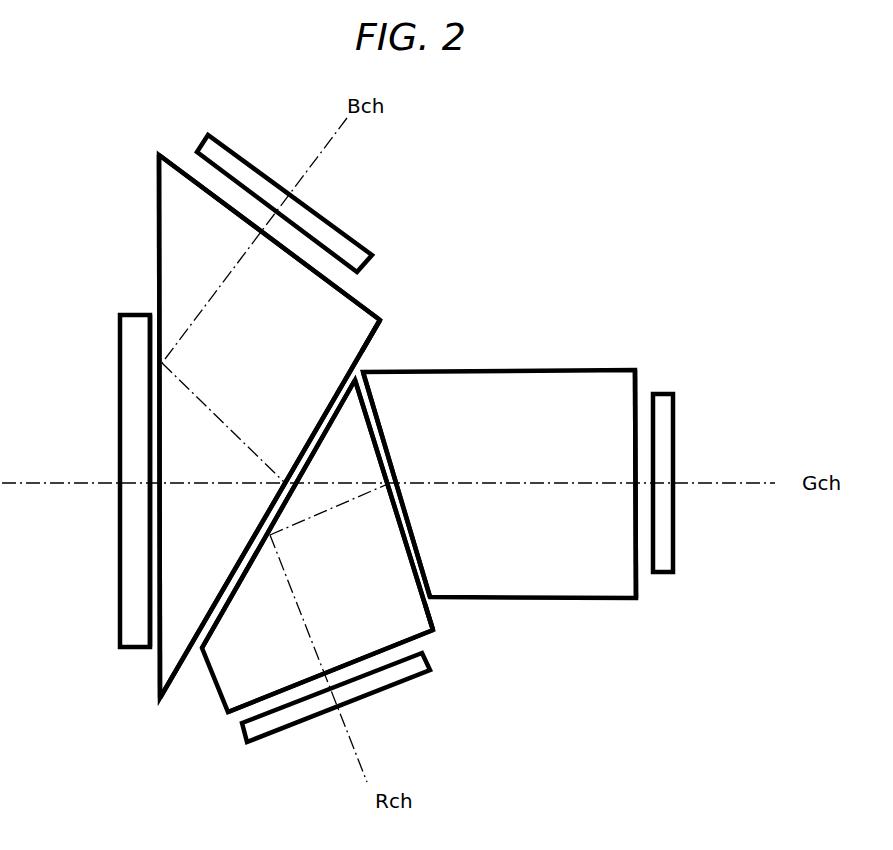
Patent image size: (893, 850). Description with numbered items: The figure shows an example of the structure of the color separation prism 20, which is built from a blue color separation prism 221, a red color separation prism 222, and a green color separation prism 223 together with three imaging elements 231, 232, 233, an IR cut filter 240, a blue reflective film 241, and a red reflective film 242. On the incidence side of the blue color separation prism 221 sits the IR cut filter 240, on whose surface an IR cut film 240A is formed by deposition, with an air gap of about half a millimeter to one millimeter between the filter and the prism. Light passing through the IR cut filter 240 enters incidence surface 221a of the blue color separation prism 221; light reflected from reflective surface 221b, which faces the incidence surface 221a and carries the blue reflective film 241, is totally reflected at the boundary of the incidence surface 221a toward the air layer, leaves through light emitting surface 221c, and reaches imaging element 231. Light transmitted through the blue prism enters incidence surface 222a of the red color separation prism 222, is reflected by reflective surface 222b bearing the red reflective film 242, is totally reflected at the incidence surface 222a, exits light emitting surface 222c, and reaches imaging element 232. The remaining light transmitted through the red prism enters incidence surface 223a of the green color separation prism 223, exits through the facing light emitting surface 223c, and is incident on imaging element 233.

The color separation prism 20 is at (588, 206).
The blue color separation prism 221 is at (264, 426).
The incidence surface 221a is at (158, 188).
The reflective surface 221b is at (307, 442).
The light emitting surface 221c is at (285, 252).
The red color separation prism 222 is at (361, 567).
The incidence surface 222a is at (247, 573).
The reflective surface 222b is at (395, 523).
The light emitting surface 222c is at (377, 652).
The green color separation prism 223 is at (499, 452).
The incidence surface 223a is at (390, 460).
The light emitting surface 223c is at (633, 433).
The imaging element 231 is at (350, 247).
The imaging element 232 is at (267, 730).
The imaging element 233 is at (667, 402).
The IR cut filter 240 is at (104, 438).
The IR cut film 240A is at (152, 305).
The blue reflective film 241 is at (373, 340).
The red reflective film 242 is at (433, 613).